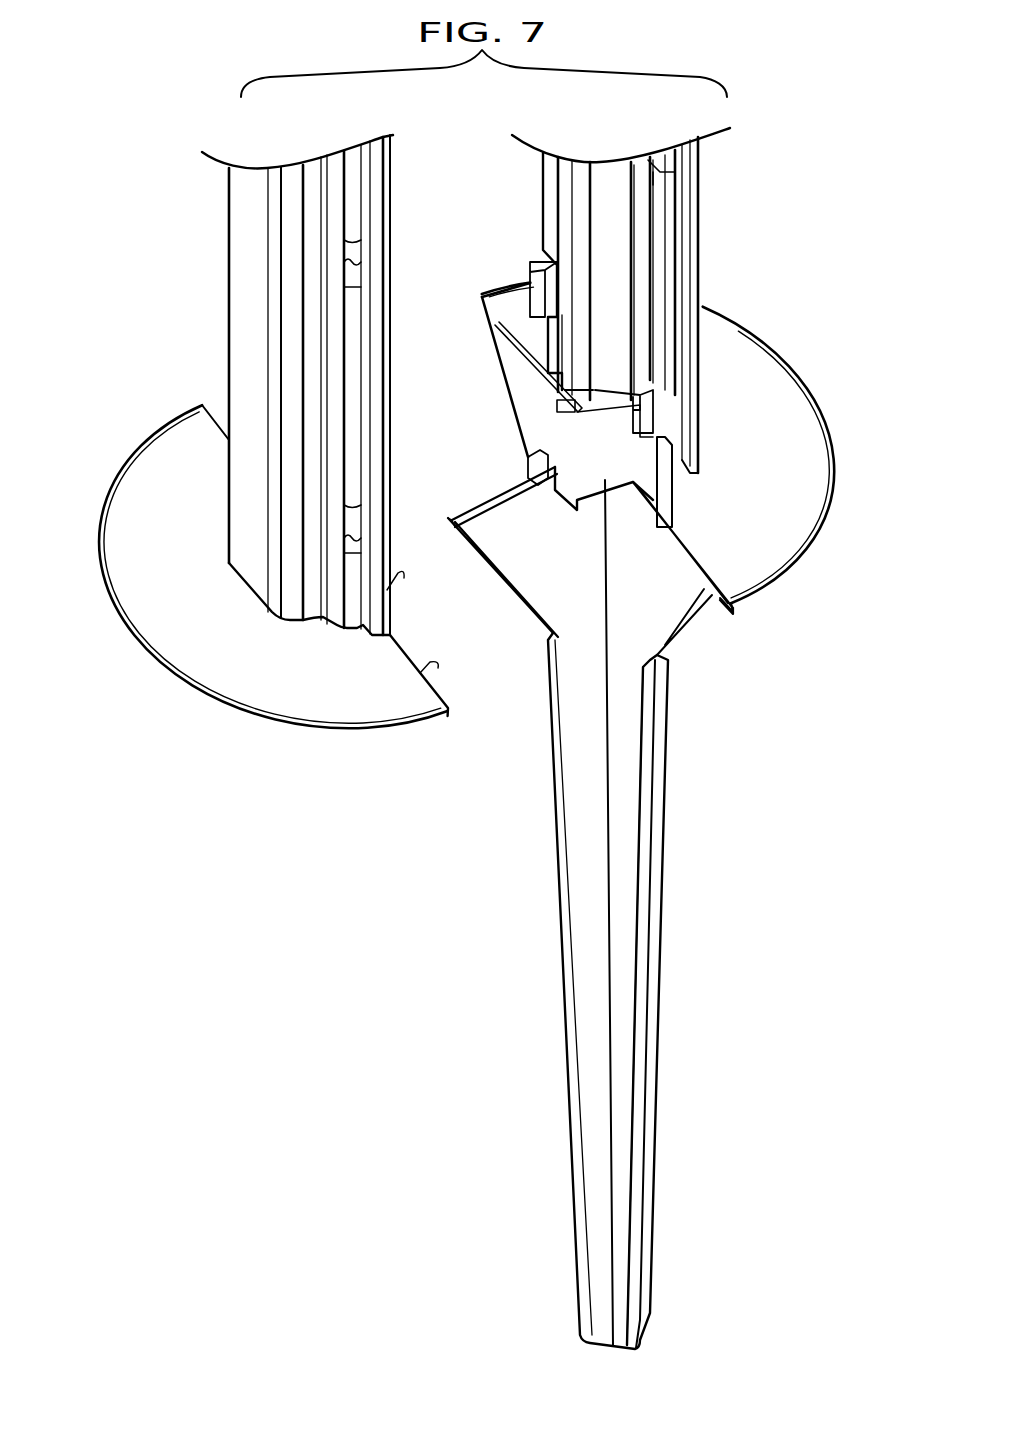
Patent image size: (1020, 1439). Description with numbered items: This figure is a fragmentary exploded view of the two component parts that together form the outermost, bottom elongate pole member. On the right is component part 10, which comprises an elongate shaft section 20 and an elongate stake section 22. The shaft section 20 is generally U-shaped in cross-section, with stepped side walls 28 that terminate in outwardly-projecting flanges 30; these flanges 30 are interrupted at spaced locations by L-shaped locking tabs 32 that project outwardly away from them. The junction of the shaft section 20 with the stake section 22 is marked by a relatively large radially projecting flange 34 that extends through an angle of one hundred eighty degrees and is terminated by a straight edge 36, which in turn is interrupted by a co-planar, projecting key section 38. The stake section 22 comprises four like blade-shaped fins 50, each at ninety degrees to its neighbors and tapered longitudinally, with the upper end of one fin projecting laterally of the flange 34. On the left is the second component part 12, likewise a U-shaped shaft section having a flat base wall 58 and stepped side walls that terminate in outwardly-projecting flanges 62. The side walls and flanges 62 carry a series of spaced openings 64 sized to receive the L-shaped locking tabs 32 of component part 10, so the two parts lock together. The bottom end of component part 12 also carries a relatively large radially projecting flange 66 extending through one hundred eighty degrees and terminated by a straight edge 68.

The component part 10 is at (675, 946).
The second component part 12 is at (226, 243).
The shaft section 20 is at (706, 205).
The stake section 22 is at (575, 1065).
The stepped side walls 28 is at (682, 272).
The outwardly-projecting flanges 30 is at (543, 210).
The L-shaped locking tabs 32 is at (528, 272).
The radially projecting flange 34 is at (807, 498).
The straight edge 36 is at (672, 573).
The key section 38 is at (585, 450).
The blade-shaped fins 50 is at (670, 703).
The flat base wall 58 is at (258, 352).
The outwardly-projecting flanges 62 is at (373, 610).
The spaced openings 64 is at (353, 260).
The radially projecting flange 66 is at (172, 585).
The straight edge 68 is at (413, 687).